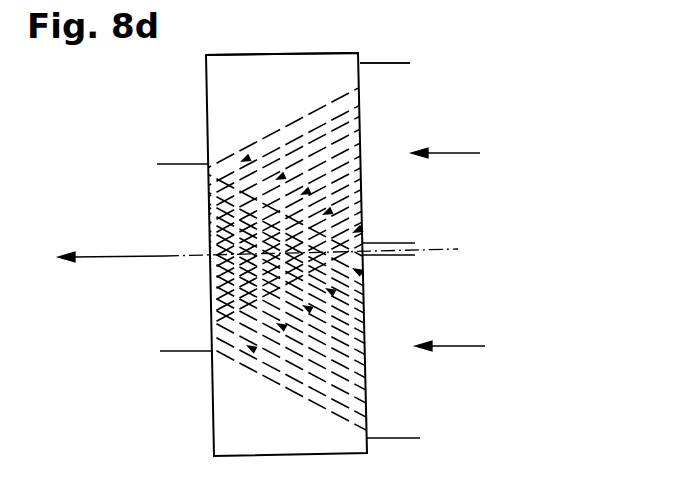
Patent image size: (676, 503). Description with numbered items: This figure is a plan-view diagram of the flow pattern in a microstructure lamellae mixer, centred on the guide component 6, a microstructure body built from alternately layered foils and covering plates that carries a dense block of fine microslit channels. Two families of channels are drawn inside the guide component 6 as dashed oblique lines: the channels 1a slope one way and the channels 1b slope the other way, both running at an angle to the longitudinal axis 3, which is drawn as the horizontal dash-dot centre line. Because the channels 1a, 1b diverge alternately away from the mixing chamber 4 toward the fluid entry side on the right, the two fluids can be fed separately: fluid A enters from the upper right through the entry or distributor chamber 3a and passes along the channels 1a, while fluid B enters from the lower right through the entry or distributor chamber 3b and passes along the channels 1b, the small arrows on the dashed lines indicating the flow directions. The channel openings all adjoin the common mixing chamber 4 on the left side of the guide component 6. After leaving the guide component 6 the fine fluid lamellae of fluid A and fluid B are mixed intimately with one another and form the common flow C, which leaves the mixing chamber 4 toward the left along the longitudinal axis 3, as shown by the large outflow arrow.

The microslit channel 1a is at (308, 153).
The microslit channel 1b is at (322, 350).
The longitudinal axis 3 is at (165, 258).
The entry chamber or distributor chamber 3a is at (416, 119).
The entry chamber or distributor chamber 3b is at (388, 215).
The mixing chamber 4 is at (177, 170).
The guide component 6 is at (224, 87).
The fluid A is at (446, 142).
The fluid B is at (450, 333).
The common flow C is at (258, 245).